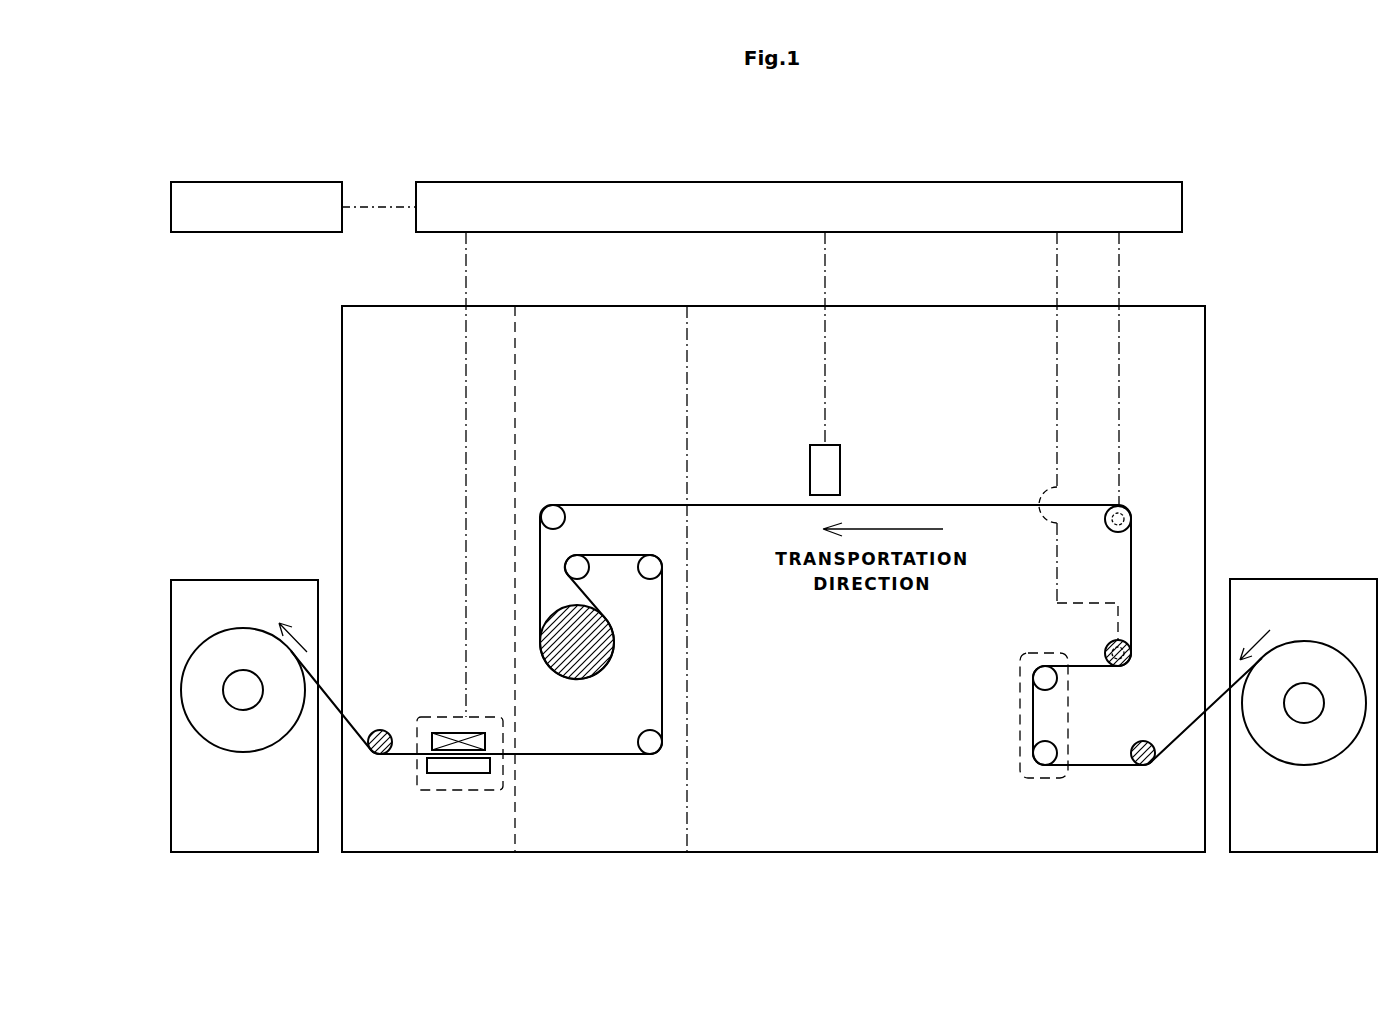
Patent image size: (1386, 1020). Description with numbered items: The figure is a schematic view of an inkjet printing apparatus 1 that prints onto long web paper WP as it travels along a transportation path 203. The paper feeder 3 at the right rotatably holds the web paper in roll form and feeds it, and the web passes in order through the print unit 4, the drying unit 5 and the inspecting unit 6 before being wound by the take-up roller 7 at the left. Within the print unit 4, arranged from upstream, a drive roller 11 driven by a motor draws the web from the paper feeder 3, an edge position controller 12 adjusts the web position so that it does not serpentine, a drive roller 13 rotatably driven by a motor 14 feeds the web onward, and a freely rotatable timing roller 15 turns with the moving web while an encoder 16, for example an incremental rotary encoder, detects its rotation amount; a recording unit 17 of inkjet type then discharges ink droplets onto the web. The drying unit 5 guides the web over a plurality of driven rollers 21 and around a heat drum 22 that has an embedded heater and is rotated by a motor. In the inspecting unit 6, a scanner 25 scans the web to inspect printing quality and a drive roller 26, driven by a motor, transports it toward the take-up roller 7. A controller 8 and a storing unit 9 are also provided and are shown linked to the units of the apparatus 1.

The inkjet printing apparatus 1 is at (1265, 425).
The paper feeder 3 is at (1244, 579).
The print unit 4 is at (1014, 318).
The drying unit 5 is at (605, 318).
The inspecting unit 6 is at (486, 318).
The take-up roller 7 is at (226, 580).
The controller 8 is at (596, 190).
The storing unit 9 is at (308, 190).
The drive roller 11 is at (1141, 741).
The edge position controller 12 is at (1040, 780).
The drive roller 13 is at (1128, 667).
The motor 14 is at (1113, 650).
The timing roller 15 is at (1129, 511).
The encoder 16 is at (1125, 519).
The recording unit 17 is at (838, 456).
The driven rollers 21 is at (553, 505).
The heat drum 22 is at (573, 680).
The scanner 25 is at (429, 717).
The drive roller 26 is at (383, 731).
The transportation path 203 is at (612, 503).